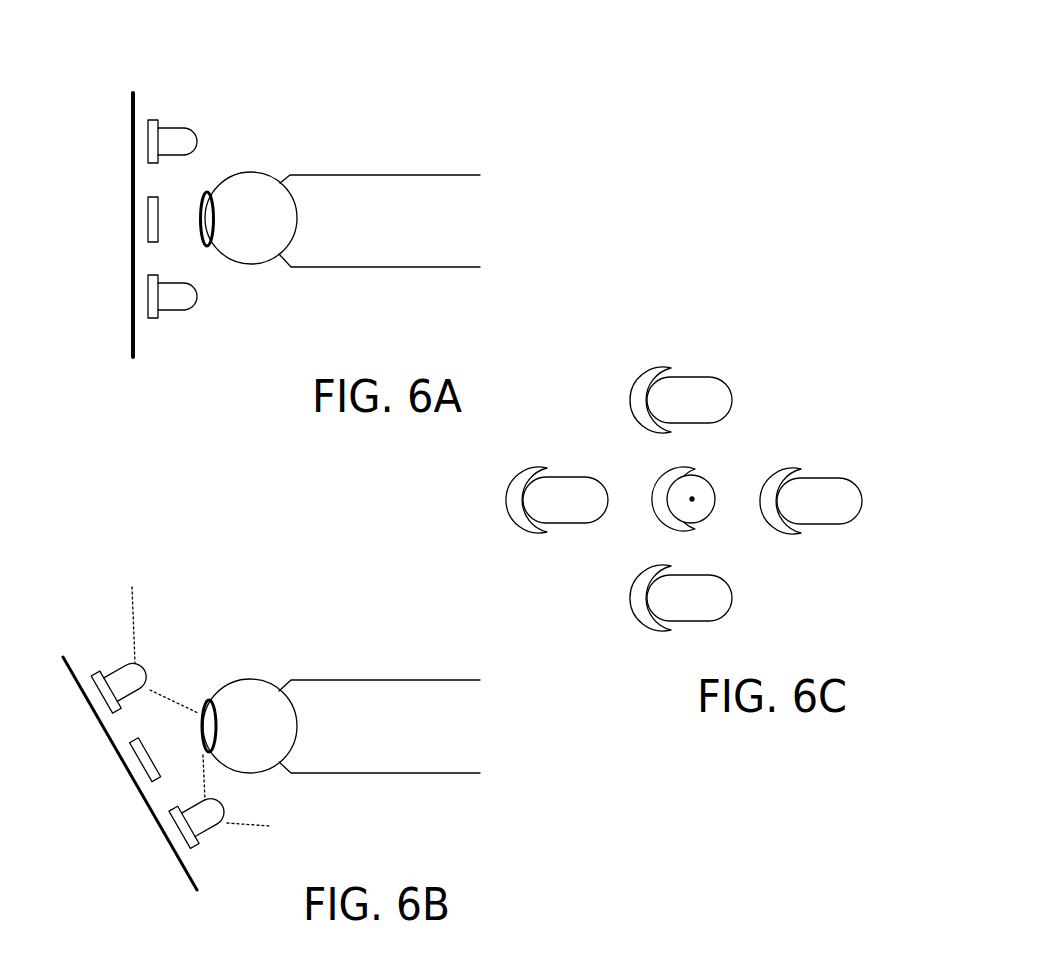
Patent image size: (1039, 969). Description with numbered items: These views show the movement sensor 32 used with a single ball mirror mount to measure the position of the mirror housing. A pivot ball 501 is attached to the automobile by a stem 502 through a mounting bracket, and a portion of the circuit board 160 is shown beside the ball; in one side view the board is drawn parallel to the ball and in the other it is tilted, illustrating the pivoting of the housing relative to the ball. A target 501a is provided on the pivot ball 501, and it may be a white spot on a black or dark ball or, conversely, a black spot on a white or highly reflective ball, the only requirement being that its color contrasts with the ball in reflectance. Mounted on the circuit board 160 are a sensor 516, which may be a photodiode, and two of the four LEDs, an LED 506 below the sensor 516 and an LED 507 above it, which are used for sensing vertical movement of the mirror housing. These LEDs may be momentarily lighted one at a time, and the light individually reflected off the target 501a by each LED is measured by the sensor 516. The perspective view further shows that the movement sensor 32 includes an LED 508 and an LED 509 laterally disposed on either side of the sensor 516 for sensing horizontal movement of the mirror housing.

In FIG. 6A, the movement sensor 32 is at (214, 104).
In FIG. 6B, the movement sensor 32 is at (191, 585).
In FIG. 6C, the movement sensor 32 is at (771, 343).
In FIG. 6A, the circuit board 160 is at (135, 337).
In FIG. 6B, the circuit board 160 is at (188, 884).
In FIG. 6A, the pivot ball 501 is at (252, 250).
In FIG. 6B, the pivot ball 501 is at (253, 762).
In FIG. 6A, the target 501a is at (207, 200).
In FIG. 6B, the target 501a is at (203, 700).
In FIG. 6A, the stem 502 is at (392, 197).
In FIG. 6B, the stem 502 is at (378, 692).
In FIG. 6A, the LED 506 is at (148, 302).
In FIG. 6B, the LED 506 is at (172, 838).
In FIG. 6C, the LED 506 is at (628, 590).
In FIG. 6A, the LED 507 is at (148, 142).
In FIG. 6B, the LED 507 is at (92, 704).
In FIG. 6C, the LED 507 is at (633, 373).
In FIG. 6C, the LED 508 is at (513, 480).
In FIG. 6C, the LED 509 is at (767, 513).
In FIG. 6A, the sensor 516 is at (148, 221).
In FIG. 6B, the sensor 516 is at (133, 768).
In FIG. 6C, the sensor 516 is at (660, 490).